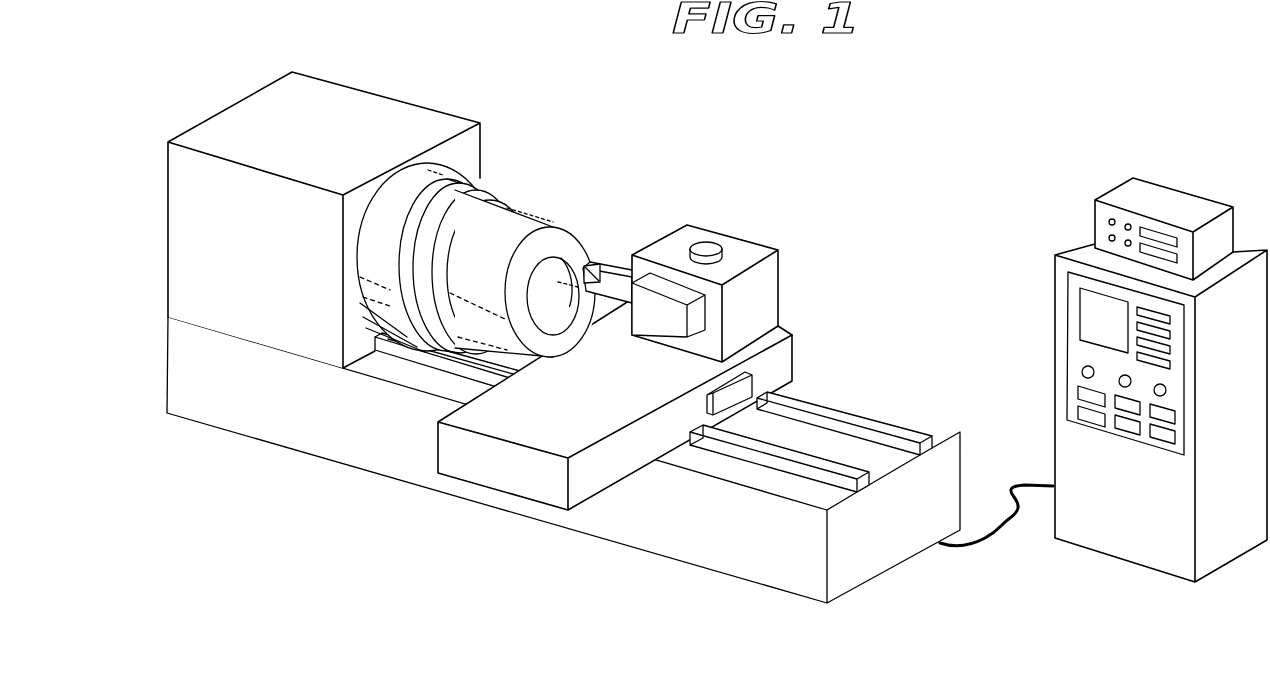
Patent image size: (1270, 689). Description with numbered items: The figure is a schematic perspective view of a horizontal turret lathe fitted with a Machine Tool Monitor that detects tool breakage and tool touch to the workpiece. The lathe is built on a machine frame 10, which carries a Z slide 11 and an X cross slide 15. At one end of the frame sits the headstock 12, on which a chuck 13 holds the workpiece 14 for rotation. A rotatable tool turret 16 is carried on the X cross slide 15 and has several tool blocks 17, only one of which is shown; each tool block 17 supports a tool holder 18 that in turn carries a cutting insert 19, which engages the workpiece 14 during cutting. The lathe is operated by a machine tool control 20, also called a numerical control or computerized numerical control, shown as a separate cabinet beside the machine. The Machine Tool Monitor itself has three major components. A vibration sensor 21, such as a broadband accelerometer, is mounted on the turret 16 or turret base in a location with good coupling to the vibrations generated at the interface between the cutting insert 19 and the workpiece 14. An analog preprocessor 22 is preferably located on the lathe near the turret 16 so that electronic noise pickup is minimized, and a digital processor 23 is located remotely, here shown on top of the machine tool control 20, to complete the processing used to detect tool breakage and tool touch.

The machine frame 10 is at (280, 420).
The Z slide 11 is at (433, 382).
The headstock 12 is at (348, 102).
The chuck 13 is at (453, 177).
The workpiece 14 is at (575, 235).
The X cross slide 15 is at (608, 463).
The rotatable tool turret 16 is at (680, 246).
The tool block 17 is at (670, 318).
The tool holder 18 is at (620, 288).
The cutting insert 19 is at (600, 262).
The machine tool control 20 is at (1072, 452).
The vibration sensor 21 is at (707, 249).
The analog preprocessor 22 is at (733, 395).
The digital processor 23 is at (1162, 205).